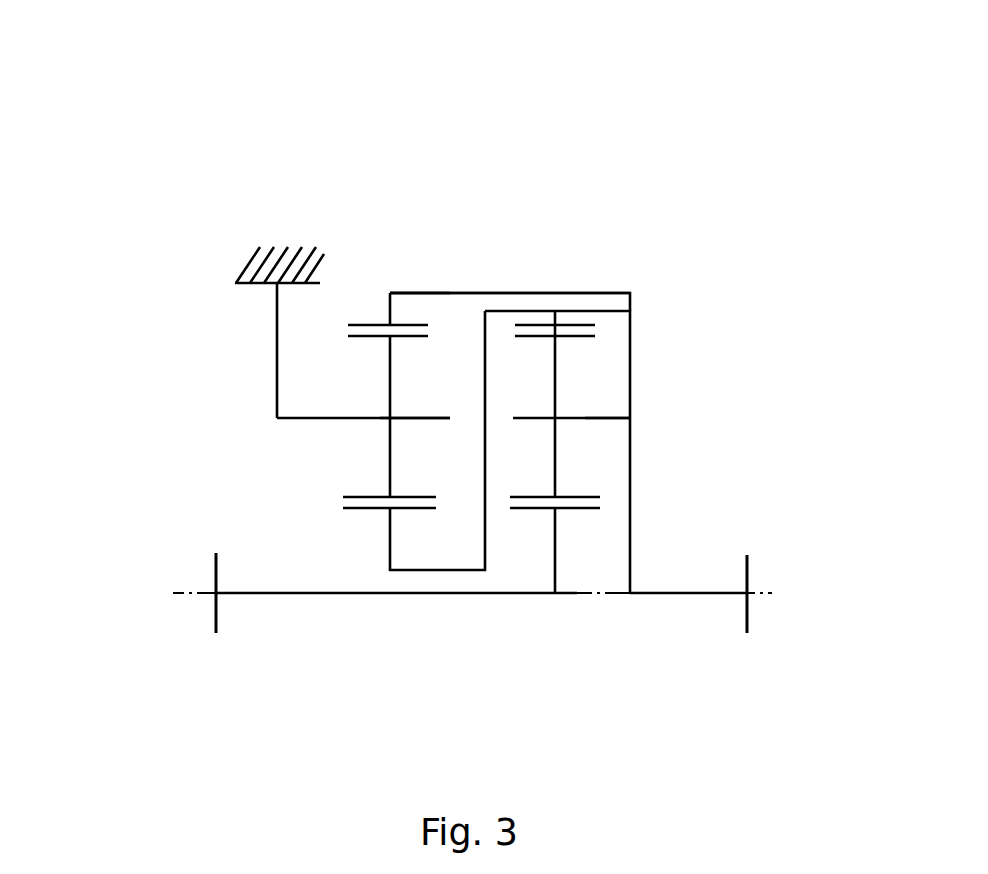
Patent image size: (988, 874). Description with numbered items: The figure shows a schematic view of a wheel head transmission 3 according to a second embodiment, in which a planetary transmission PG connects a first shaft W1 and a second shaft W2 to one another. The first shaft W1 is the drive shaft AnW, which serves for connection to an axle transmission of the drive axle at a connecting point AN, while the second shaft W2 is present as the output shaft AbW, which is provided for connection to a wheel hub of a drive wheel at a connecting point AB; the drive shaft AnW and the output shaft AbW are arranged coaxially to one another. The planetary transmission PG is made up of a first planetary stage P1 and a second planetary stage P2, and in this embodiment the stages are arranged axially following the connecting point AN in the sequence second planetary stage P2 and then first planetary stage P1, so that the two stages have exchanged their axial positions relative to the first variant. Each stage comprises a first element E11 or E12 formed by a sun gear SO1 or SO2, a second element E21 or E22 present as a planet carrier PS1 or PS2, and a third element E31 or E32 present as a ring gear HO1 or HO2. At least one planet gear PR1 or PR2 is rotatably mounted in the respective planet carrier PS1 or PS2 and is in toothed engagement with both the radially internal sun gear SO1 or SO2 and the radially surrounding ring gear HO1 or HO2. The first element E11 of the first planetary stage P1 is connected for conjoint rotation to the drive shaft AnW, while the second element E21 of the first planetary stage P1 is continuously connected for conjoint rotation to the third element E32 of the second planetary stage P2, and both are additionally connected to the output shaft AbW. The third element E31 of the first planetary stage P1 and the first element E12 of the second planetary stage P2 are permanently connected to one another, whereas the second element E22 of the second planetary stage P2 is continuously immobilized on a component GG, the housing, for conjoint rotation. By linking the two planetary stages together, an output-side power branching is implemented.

The wheel head transmission 3 is at (130, 123).
The planetary transmission PG is at (468, 133).
The second planetary stage P2 is at (392, 188).
The first planetary stage P1 is at (562, 222).
The component for conjoint rotation GG is at (278, 265).
The ring gear HO2 is at (390, 320).
The ring gear HO1 is at (553, 322).
The third element E32 is at (391, 319).
The third element E31 is at (554, 319).
The second element E22 is at (379, 417).
The second element E21 is at (585, 418).
The planet carrier PS2 is at (386, 419).
The planet carrier PS1 is at (612, 418).
The planet gear PR2 is at (388, 465).
The planet gear PR1 is at (556, 478).
The first element E12 is at (392, 555).
The first element E11 is at (553, 560).
The sun gear SO2 is at (392, 548).
The sun gear SO1 is at (556, 549).
The connecting point AN is at (200, 547).
The connecting point AB is at (772, 565).
The drive shaft AnW is at (233, 593).
The output shaft AbW is at (705, 593).
The first shaft W1 is at (277, 595).
The second shaft W2 is at (662, 595).